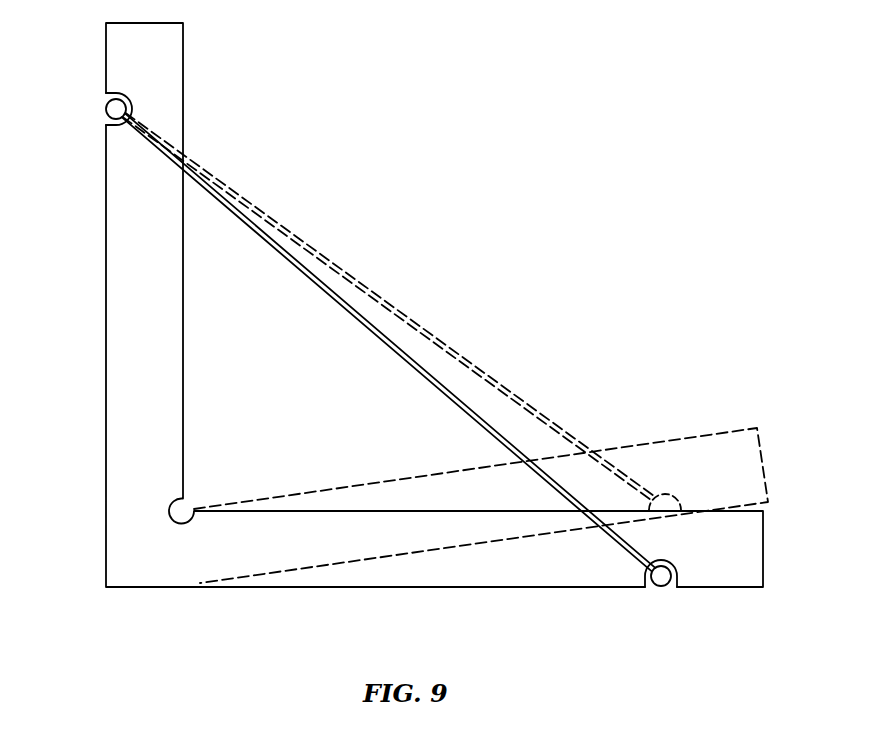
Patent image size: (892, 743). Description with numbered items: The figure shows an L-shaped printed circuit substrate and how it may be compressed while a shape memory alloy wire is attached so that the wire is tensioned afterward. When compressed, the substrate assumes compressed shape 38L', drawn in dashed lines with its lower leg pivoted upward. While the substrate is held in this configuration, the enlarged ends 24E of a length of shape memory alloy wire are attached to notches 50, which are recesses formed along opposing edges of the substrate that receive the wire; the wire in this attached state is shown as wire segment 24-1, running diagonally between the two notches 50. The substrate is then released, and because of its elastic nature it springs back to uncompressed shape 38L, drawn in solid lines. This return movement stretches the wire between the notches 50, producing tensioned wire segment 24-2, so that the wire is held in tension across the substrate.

The uncompressed shape 38L is at (463, 305).
The compressed shape 38L' is at (509, 505).
The notches 50 is at (124, 94).
The ends of wires 24E is at (105, 108).
The wire segment 24-1 is at (449, 342).
The tensioned wire segment 24-2 is at (400, 355).